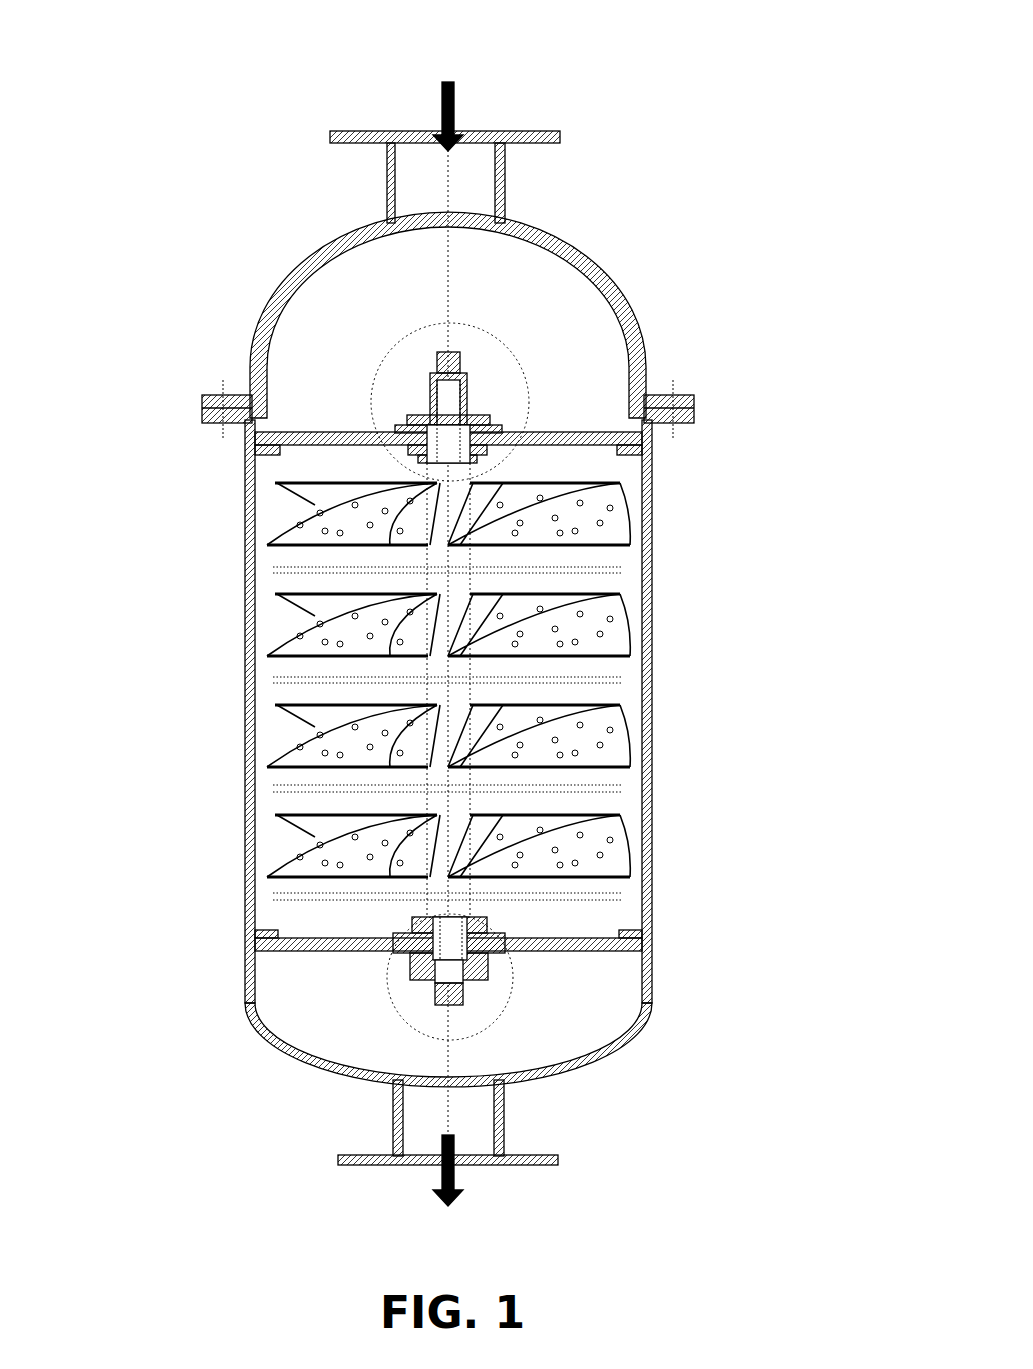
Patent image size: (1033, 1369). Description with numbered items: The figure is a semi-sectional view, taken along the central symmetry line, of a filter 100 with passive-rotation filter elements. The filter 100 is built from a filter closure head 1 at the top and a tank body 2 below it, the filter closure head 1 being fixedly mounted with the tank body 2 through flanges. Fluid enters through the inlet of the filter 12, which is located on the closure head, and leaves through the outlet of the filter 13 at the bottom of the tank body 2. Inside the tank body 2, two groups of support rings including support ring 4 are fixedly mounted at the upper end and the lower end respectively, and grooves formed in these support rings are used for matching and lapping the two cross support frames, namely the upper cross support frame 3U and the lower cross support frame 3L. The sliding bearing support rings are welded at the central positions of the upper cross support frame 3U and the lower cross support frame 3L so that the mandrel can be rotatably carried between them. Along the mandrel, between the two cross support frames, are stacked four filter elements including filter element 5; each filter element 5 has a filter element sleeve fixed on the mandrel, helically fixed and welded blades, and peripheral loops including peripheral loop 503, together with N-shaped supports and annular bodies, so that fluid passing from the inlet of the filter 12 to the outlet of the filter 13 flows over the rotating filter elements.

The filter 100 is at (435, 603).
The filter closure head 1 is at (267, 307).
The inlet of the filter 12 is at (517, 197).
The outlet of the filter 13 is at (530, 1142).
The tank body 2 is at (207, 425).
The support ring 4 is at (243, 462).
The upper cross support frame 3U is at (645, 457).
The lower cross support frame 3L is at (648, 932).
The filter element 5 is at (575, 640).
The peripheral loop 503 is at (622, 788).